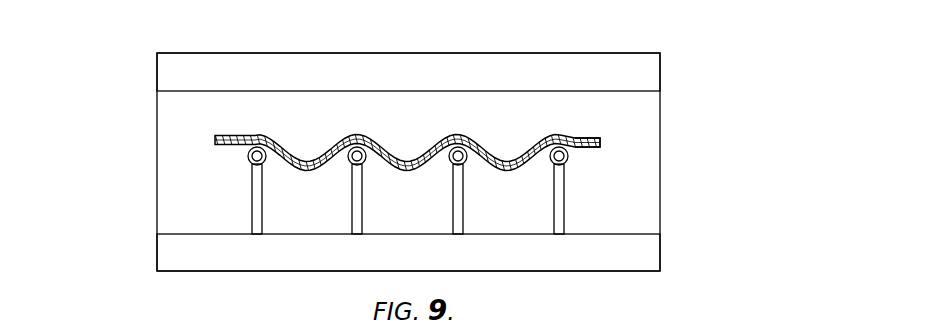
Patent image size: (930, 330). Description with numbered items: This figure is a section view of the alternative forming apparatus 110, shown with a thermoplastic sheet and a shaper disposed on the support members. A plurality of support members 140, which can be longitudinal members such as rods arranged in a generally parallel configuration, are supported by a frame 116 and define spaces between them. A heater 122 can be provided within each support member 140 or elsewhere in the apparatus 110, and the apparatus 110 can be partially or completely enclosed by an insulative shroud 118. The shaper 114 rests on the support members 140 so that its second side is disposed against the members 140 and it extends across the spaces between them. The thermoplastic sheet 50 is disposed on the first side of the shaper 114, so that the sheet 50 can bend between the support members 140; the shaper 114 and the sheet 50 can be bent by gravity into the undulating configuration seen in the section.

The forming apparatus 110 is at (776, 60).
The insulative shroud 118 is at (157, 73).
The frame 116 is at (660, 247).
The shaper 114 is at (600, 145).
The thermoplastic sheet 50 is at (548, 134).
The support members 140 is at (250, 165).
The heater 122 is at (246, 153).